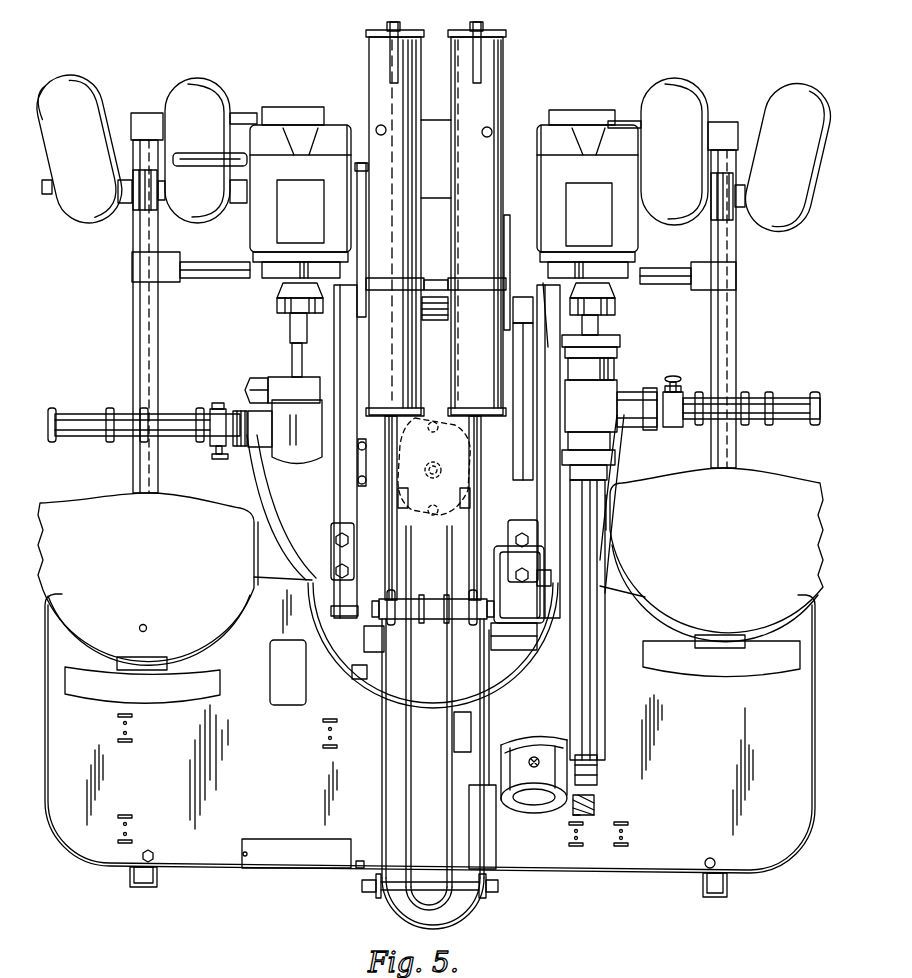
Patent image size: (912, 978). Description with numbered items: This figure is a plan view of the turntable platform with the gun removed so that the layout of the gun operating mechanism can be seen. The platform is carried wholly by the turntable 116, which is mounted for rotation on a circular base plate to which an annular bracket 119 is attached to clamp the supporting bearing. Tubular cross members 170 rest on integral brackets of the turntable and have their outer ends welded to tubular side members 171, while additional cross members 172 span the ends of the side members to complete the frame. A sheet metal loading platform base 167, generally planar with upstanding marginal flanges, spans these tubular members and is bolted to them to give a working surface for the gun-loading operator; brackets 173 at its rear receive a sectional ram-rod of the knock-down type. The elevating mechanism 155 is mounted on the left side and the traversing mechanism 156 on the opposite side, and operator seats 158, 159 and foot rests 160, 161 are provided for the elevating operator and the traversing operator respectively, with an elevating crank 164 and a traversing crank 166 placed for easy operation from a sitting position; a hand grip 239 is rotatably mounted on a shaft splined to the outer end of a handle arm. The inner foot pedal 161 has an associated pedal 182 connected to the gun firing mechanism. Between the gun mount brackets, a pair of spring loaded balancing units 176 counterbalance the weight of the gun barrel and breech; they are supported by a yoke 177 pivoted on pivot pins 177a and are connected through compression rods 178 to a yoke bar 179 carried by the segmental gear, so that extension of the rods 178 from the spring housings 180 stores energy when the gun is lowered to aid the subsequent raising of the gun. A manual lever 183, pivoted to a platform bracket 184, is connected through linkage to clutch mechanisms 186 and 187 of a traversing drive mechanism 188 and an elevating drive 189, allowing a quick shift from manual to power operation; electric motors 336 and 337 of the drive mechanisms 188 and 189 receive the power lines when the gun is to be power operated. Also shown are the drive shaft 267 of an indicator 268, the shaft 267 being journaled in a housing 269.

The turntable 116 is at (270, 476).
The annular bracket 119 is at (248, 491).
The elevating mechanism 155 is at (257, 402).
The traversing mechanism 156 is at (617, 372).
The operator seat 158 is at (122, 508).
The operator seat 159 is at (756, 488).
The foot rest 160 is at (778, 100).
The foot rest 161 is at (170, 97).
The elevating crank 164 is at (124, 412).
The traversing crank 166 is at (752, 384).
The loading platform base 167 is at (208, 855).
The tubular cross members 170 is at (199, 278).
The tubular side members 171 is at (150, 339).
The cross members 172 is at (238, 118).
The brackets 173 is at (140, 882).
The spring loaded balancing units 176 is at (437, 36).
The yoke 177 is at (504, 293).
The pivot pins 177a is at (537, 293).
The compression rods 178 is at (471, 544).
The yoke bar 179 is at (437, 614).
The spring housings 180 is at (385, 63).
The pedal 182 is at (210, 152).
The manual lever 183 is at (484, 897).
The platform bracket 184 is at (399, 882).
The clutch mechanism 186 is at (590, 290).
The clutch mechanism 187 is at (290, 290).
The traversing drive mechanism 188 is at (615, 178).
The elevating drive 189 is at (270, 179).
The hand grip 239 is at (697, 367).
The drive shaft 267 is at (594, 782).
The indicator 268 is at (524, 800).
The housing 269 is at (577, 685).
The electric motor 336 is at (640, 242).
The electric motor 337 is at (263, 230).